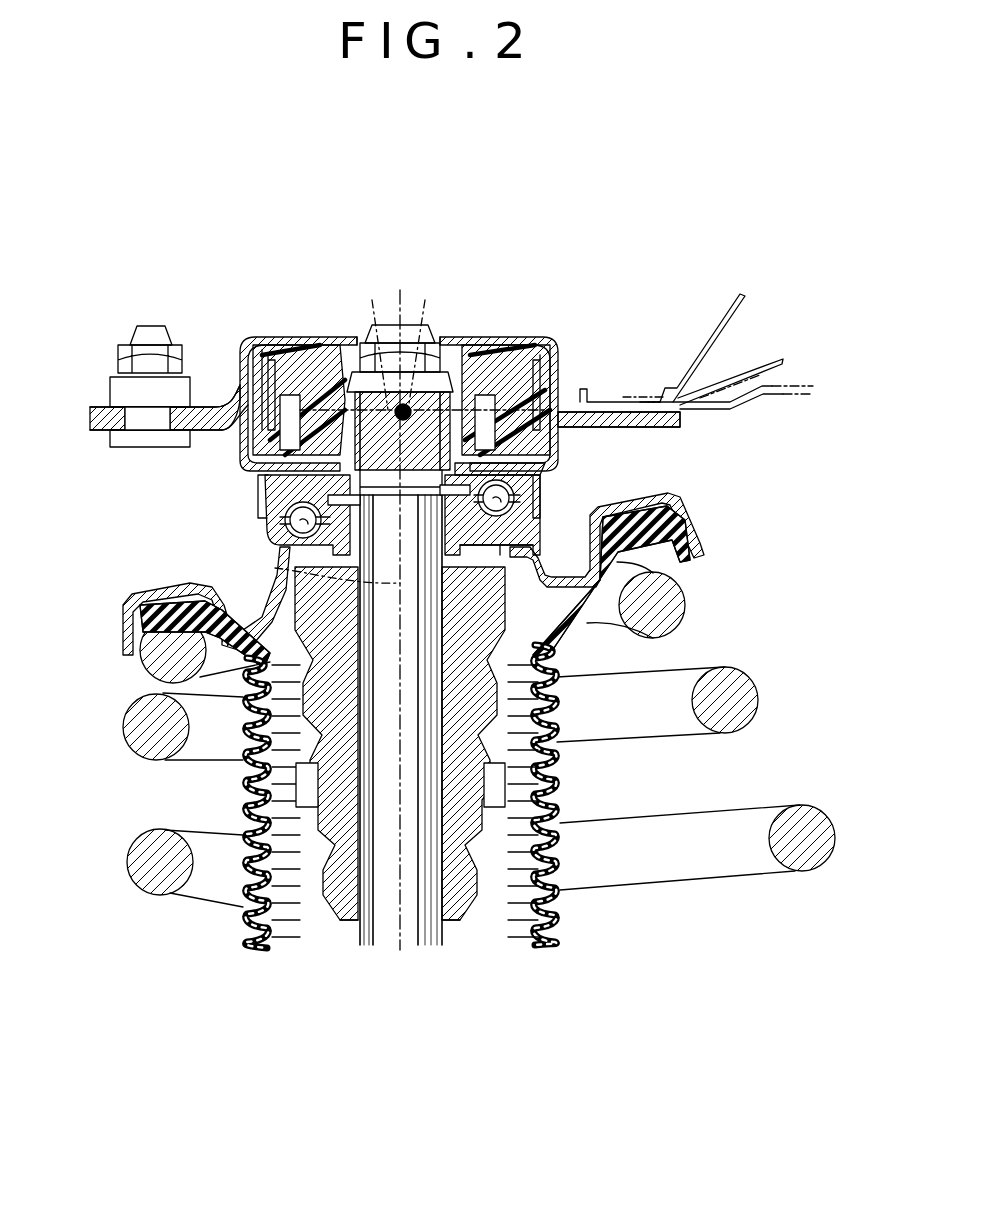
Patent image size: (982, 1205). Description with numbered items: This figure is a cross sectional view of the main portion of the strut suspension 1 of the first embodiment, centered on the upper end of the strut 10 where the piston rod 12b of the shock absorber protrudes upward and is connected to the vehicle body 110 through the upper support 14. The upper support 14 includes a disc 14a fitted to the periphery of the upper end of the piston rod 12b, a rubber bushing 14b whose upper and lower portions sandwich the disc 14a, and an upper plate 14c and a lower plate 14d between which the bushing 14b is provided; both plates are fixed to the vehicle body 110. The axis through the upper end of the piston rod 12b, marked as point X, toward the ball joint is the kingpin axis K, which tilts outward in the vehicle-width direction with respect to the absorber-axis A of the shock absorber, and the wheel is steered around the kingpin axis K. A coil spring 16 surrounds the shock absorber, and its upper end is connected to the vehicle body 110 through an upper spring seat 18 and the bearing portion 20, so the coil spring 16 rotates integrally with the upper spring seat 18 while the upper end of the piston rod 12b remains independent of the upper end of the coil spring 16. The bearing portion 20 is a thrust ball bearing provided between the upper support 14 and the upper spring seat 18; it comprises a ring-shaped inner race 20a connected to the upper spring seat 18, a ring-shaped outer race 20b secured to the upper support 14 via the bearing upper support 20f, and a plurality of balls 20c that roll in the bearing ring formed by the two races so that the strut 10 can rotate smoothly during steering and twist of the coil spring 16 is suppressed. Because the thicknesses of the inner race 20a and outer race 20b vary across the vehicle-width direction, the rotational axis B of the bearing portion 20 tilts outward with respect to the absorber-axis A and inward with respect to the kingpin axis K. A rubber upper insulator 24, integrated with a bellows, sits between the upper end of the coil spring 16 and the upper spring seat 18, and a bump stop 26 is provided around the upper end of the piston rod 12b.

The strut suspension 1 is at (503, 556).
The strut 10 is at (292, 760).
The piston rod 12b is at (414, 745).
The upper support 14 is at (340, 362).
The disc 14a is at (619, 381).
The bushing 14b is at (391, 352).
The upper plate 14c is at (671, 345).
The lower plate 14d is at (724, 427).
The coil spring 16 is at (479, 734).
The upper spring seat 18 is at (457, 574).
The bearing portion 20 is at (350, 515).
The inner race 20a is at (522, 537).
The outer race 20b is at (546, 458).
The balls 20c is at (584, 494).
The bearing upper support 20f is at (225, 492).
The upper insulator 24 is at (415, 590).
The bump stop 26 is at (363, 796).
The vehicle body 110 is at (141, 420).
The absorber-axis A is at (425, 349).
The rotational axis B is at (307, 566).
The kingpin axis K is at (420, 584).
The point X is at (378, 461).